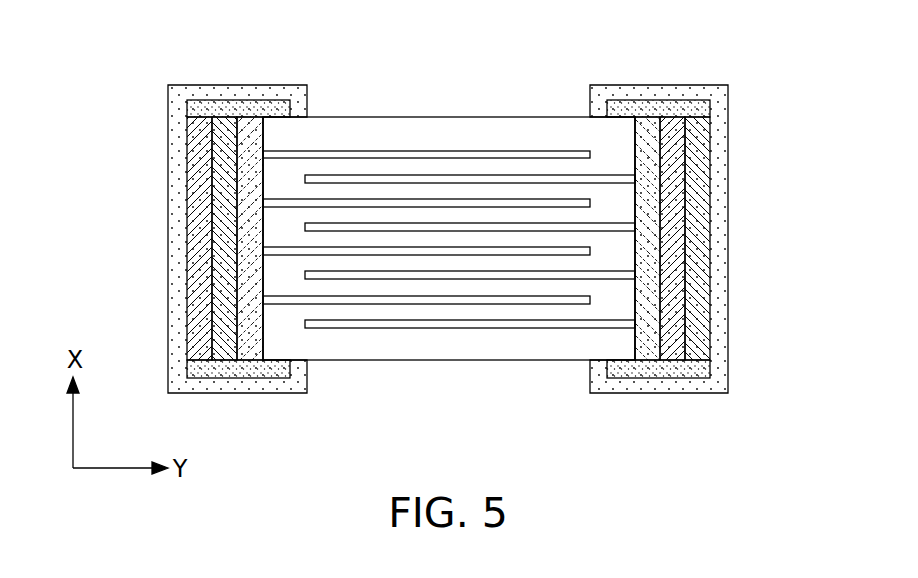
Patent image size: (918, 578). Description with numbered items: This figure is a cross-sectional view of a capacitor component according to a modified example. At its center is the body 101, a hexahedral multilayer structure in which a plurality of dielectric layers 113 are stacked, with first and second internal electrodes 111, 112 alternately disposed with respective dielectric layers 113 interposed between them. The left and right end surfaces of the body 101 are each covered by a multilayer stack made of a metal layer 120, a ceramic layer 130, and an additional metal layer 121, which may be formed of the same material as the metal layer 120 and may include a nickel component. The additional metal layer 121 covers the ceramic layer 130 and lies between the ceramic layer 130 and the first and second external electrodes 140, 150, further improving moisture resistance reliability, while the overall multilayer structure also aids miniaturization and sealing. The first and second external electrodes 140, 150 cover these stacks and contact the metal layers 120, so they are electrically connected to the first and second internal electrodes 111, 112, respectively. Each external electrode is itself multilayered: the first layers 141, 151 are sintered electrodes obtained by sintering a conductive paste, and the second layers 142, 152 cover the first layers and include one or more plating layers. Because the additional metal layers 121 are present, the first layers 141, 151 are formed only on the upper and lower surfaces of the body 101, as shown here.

The body 101 is at (465, 117).
The first internal electrode 111 is at (462, 336).
The second internal electrode 112 is at (546, 304).
The dielectric layer 113 is at (281, 188).
The metal layer 120 is at (448, 238).
The additional metal layer 121 is at (196, 198).
The ceramic layer 130 is at (214, 242).
The first external electrode 140 is at (724, 209).
The first layer of first external electrode 141 is at (652, 104).
The second layer of first external electrode 142 is at (701, 91).
The second external electrode 150 is at (172, 209).
The first layer of second external electrode 151 is at (248, 104).
The second layer of second external electrode 152 is at (197, 91).